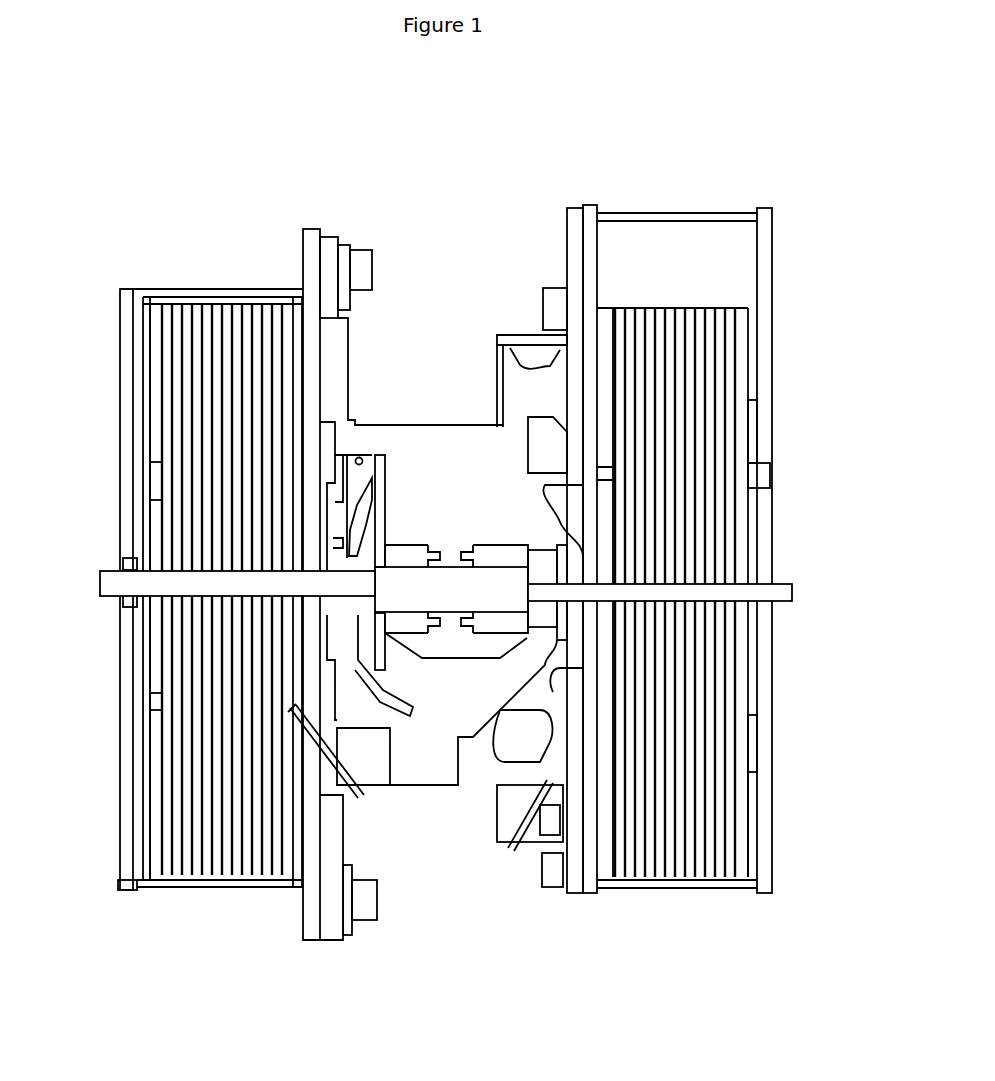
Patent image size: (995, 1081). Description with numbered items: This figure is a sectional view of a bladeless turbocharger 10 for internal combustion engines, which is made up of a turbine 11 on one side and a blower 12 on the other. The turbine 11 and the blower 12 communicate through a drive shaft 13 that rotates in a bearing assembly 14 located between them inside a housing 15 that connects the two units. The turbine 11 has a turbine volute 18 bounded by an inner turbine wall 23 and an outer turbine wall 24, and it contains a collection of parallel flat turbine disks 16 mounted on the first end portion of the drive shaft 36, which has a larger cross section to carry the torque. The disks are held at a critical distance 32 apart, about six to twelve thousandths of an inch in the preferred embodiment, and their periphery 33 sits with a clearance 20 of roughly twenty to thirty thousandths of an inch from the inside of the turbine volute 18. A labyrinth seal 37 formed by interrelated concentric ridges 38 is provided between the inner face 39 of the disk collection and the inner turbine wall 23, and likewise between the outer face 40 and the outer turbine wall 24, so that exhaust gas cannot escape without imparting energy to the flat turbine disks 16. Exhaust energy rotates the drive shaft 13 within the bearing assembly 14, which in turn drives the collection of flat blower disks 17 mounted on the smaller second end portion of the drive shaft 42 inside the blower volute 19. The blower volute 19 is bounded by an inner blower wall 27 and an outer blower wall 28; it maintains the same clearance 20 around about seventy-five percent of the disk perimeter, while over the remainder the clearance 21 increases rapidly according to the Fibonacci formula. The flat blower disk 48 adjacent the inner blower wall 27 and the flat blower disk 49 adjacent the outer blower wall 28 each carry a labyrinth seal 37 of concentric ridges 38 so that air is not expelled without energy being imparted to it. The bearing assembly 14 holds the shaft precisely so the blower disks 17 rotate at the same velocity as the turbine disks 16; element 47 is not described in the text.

The bladeless turbocharger 10 is at (463, 165).
The turbine 11 is at (368, 173).
The blower 12 is at (538, 172).
The drive shaft 13 is at (350, 578).
The bearing assembly 14 is at (447, 578).
The housing 15 is at (473, 425).
The flat turbine disks 16 is at (200, 393).
The flat blower disks 17 is at (690, 367).
The turbine volute 18 is at (203, 289).
The blower volute 19 is at (692, 213).
The clearance 20 is at (178, 323).
The clearance 21 is at (722, 233).
The inner turbine wall 23 is at (297, 855).
The outer turbine wall 24 is at (145, 822).
The inner blower wall 27 is at (597, 222).
The outer blower wall 28 is at (757, 831).
The critical distance 32 is at (237, 300).
The periphery 33 is at (155, 865).
The first end portion of the drive shaft 36 is at (113, 578).
The labyrinth seal 37 is at (156, 699).
The concentric ridges 38 is at (152, 718).
The inner face 39 is at (285, 832).
The outer face 40 is at (160, 790).
The second end portion of the drive shaft 42 is at (782, 604).
The inner wall of second unit 47 is at (750, 312).
The flat blower disk 48 is at (607, 330).
The flat blower disk 49 is at (755, 798).